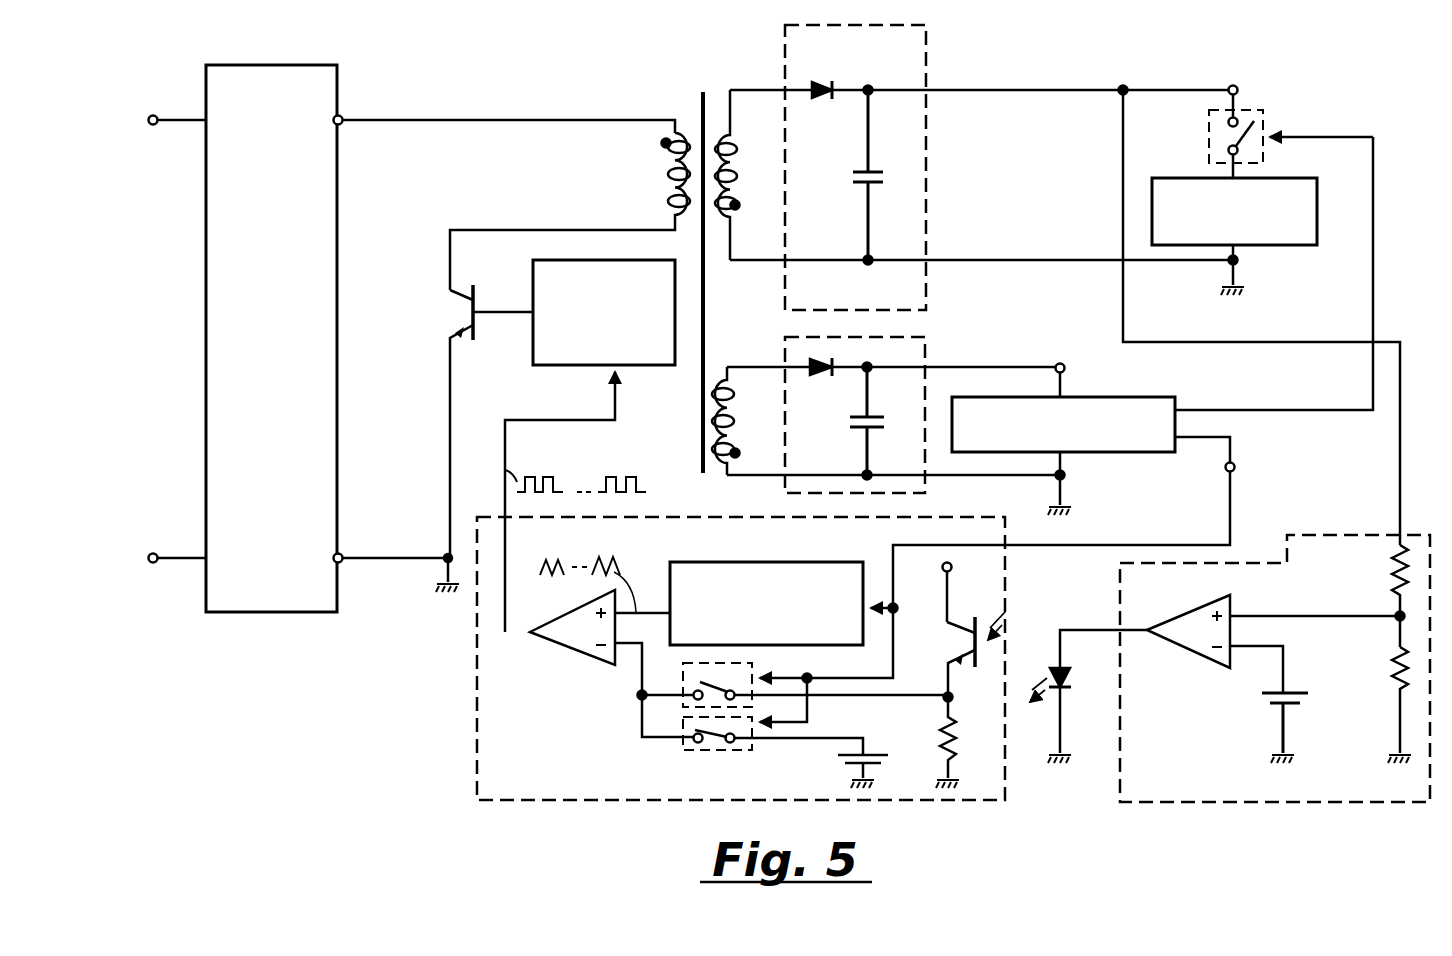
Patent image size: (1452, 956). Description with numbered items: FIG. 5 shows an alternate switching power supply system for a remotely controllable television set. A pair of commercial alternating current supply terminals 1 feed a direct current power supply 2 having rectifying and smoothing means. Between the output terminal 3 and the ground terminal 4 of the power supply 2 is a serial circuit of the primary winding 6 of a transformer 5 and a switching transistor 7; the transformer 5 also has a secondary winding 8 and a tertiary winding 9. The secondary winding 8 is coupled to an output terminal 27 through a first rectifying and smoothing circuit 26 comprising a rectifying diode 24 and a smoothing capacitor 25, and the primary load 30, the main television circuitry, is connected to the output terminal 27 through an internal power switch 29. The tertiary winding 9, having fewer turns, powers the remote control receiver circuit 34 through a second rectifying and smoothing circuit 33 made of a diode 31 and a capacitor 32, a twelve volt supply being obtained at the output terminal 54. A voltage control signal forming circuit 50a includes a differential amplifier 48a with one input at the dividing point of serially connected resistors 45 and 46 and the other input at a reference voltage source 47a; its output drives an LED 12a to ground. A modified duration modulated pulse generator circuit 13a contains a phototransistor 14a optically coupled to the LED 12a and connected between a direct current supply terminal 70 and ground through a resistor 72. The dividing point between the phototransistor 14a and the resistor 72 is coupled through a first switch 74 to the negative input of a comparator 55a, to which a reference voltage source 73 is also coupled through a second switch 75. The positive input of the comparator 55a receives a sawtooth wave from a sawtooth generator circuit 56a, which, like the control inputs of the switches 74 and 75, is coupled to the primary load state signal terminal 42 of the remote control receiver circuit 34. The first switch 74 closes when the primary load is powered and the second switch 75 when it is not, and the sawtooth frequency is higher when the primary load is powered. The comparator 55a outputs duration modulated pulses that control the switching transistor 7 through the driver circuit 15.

The commercial alternating current supply terminals 1 is at (153, 126).
The direct current power supply 2 is at (318, 65).
The output terminal 3 is at (342, 117).
The ground terminal 4 is at (341, 552).
The transformer 5 is at (705, 78).
The primary winding 6 is at (665, 179).
The switching transistor 7 is at (458, 290).
The secondary winding 8 is at (736, 173).
The tertiary winding 9 is at (737, 422).
The LED 12a is at (1068, 678).
The duration modulated pulse generator circuit 13a is at (474, 688).
The phototransistor 14a is at (955, 633).
The driver circuit 15 is at (535, 279).
The rectifying diode 24 is at (820, 84).
The smoothing capacitor 25 is at (860, 171).
The first rectifying and smoothing circuit 26 is at (928, 62).
The output terminal 27 is at (1239, 92).
The internal power switch 29 is at (1207, 117).
The primary load 30 is at (1293, 232).
The diode 31 is at (822, 377).
The capacitor 32 is at (855, 430).
The second rectifying and smoothing circuit 33 is at (927, 348).
The remote control receiver circuit 34 is at (1155, 405).
The primary load state signal terminal 42 is at (1235, 467).
The resistor 45 is at (1393, 568).
The resistor 46 is at (1393, 670).
The reference voltage source 47a is at (1304, 696).
The differential amplifier 48a is at (1194, 644).
The voltage control signal forming circuit 50a is at (1323, 533).
The output terminal 54 is at (1060, 362).
The comparator 55a is at (575, 643).
The sawtooth generator circuit 56a is at (718, 562).
The direct current supply terminal 70 is at (943, 570).
The resistor 72 is at (955, 734).
The reference voltage source 73 is at (880, 754).
The first switch 74 is at (681, 682).
The second switch 75 is at (682, 750).